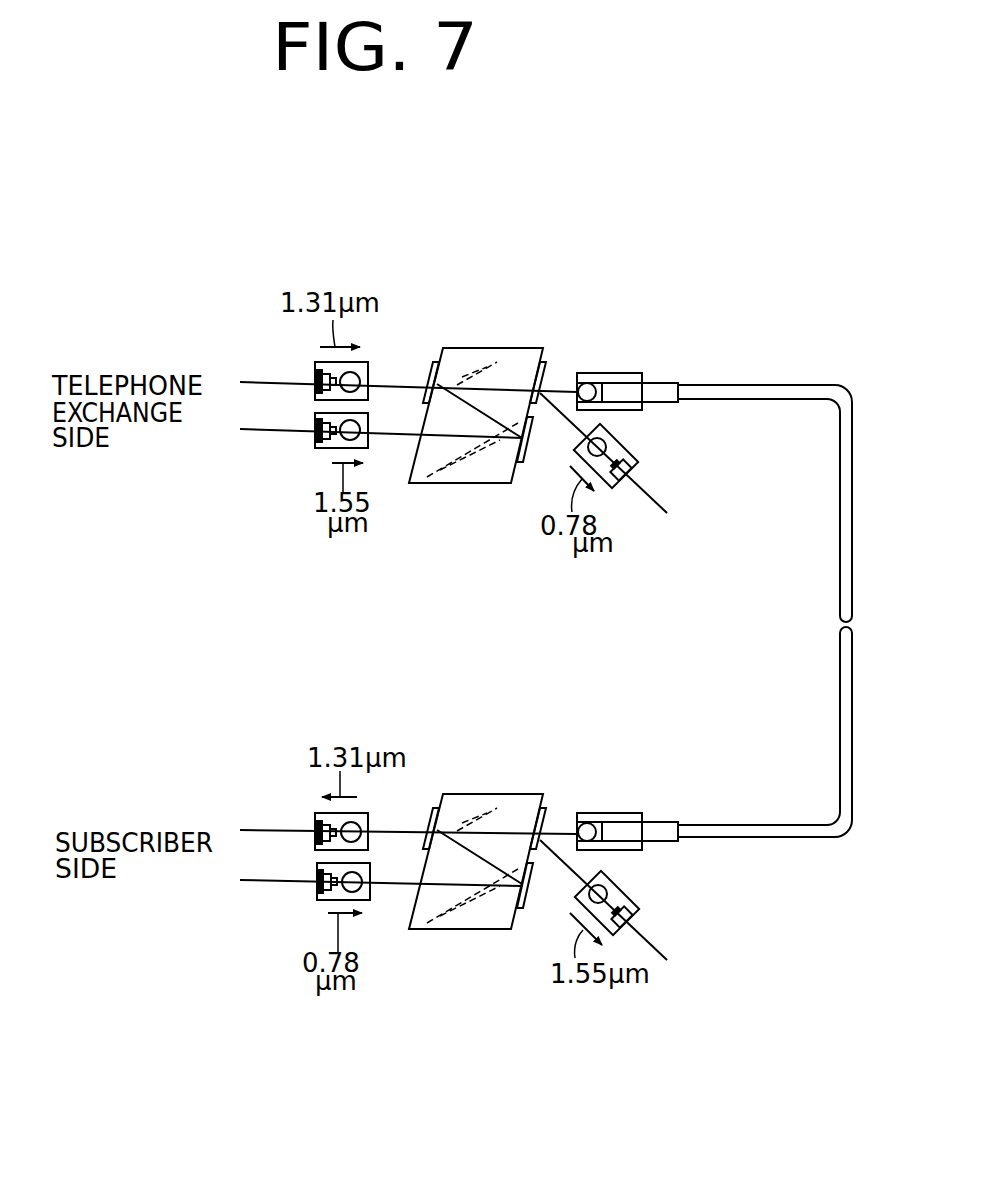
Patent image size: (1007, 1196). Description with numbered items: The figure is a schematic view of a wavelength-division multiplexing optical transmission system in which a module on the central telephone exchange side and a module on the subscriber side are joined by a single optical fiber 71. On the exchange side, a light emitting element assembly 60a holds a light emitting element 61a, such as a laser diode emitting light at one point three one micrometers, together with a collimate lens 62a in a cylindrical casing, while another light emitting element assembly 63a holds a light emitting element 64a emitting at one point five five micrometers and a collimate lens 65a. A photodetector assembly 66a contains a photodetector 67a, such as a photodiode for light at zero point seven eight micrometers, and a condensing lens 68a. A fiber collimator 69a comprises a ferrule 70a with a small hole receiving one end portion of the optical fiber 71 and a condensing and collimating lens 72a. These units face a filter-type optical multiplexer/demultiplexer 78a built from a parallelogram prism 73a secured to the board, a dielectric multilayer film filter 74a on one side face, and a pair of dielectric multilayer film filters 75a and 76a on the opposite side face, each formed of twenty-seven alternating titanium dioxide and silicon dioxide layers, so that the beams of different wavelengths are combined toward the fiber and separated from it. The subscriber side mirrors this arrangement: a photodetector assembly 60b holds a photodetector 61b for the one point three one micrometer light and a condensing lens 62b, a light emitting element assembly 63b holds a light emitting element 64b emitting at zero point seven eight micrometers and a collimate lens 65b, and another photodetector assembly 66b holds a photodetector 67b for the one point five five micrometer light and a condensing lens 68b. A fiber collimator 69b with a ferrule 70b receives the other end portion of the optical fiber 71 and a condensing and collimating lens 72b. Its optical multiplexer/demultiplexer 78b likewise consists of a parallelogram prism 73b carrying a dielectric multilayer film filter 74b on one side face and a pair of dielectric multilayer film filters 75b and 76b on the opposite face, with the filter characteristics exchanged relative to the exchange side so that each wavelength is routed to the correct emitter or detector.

The light emitting element assembly 60a is at (367, 347).
The light emitting element 61a is at (313, 364).
The collimate lens 62a is at (367, 363).
The light emitting element assembly 63a is at (308, 446).
The light emitting element 64a is at (323, 449).
The collimate lens 65a is at (367, 449).
The photodetector assembly 66a is at (645, 473).
The photodetector 67a is at (621, 482).
The condensing lens 68a is at (609, 441).
The fiber collimator 69a is at (618, 370).
The ferrule 70a is at (667, 382).
The optical fiber 71 is at (848, 455).
The condensing and collimating lens 72a is at (587, 373).
The parallelogram prism 73a is at (483, 352).
The dielectric multilayer film filter 74a is at (430, 363).
The dielectric multilayer film filter 75a is at (546, 362).
The dielectric multilayer film filter 76a is at (522, 463).
The optical multiplexer/demultiplexer 78a is at (505, 342).
The photodetector assembly 60b is at (372, 789).
The photodetector 61b is at (315, 815).
The condensing lens 62b is at (368, 815).
The light emitting element assembly 63b is at (306, 914).
The light emitting element 64b is at (317, 890).
The collimate lens 65b is at (369, 899).
The photodetector assembly 66b is at (652, 900).
The photodetector 67b is at (620, 929).
The condensing lens 68b is at (614, 886).
The fiber collimator 69b is at (620, 800).
The ferrule 70b is at (665, 822).
The condensing and collimating lens 72b is at (583, 813).
The parallelogram prism 73b is at (482, 798).
The dielectric multilayer film filter 74b is at (430, 808).
The dielectric multilayer film filter 75b is at (542, 794).
The dielectric multilayer film filter 76b is at (522, 909).
The optical multiplexer/demultiplexer 78b is at (466, 938).